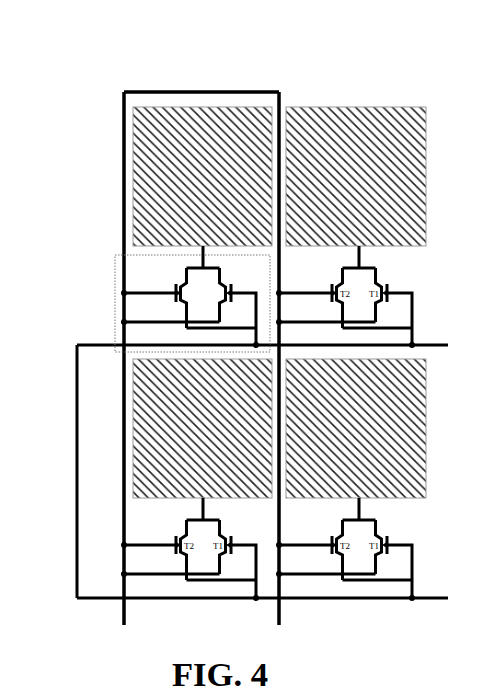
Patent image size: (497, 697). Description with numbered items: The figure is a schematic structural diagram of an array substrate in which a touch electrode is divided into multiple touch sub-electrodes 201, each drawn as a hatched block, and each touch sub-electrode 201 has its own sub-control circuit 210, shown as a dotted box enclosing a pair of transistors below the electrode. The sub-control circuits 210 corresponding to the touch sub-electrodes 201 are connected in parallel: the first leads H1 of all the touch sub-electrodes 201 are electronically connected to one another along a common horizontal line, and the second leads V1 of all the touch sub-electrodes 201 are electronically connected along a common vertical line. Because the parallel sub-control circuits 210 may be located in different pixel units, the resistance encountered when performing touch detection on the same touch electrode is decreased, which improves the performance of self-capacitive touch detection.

The touch sub-electrode 201 is at (135, 165).
The sub-control circuit 210 is at (115, 257).
The second lead V1 is at (203, 92).
The first lead H1 is at (77, 463).